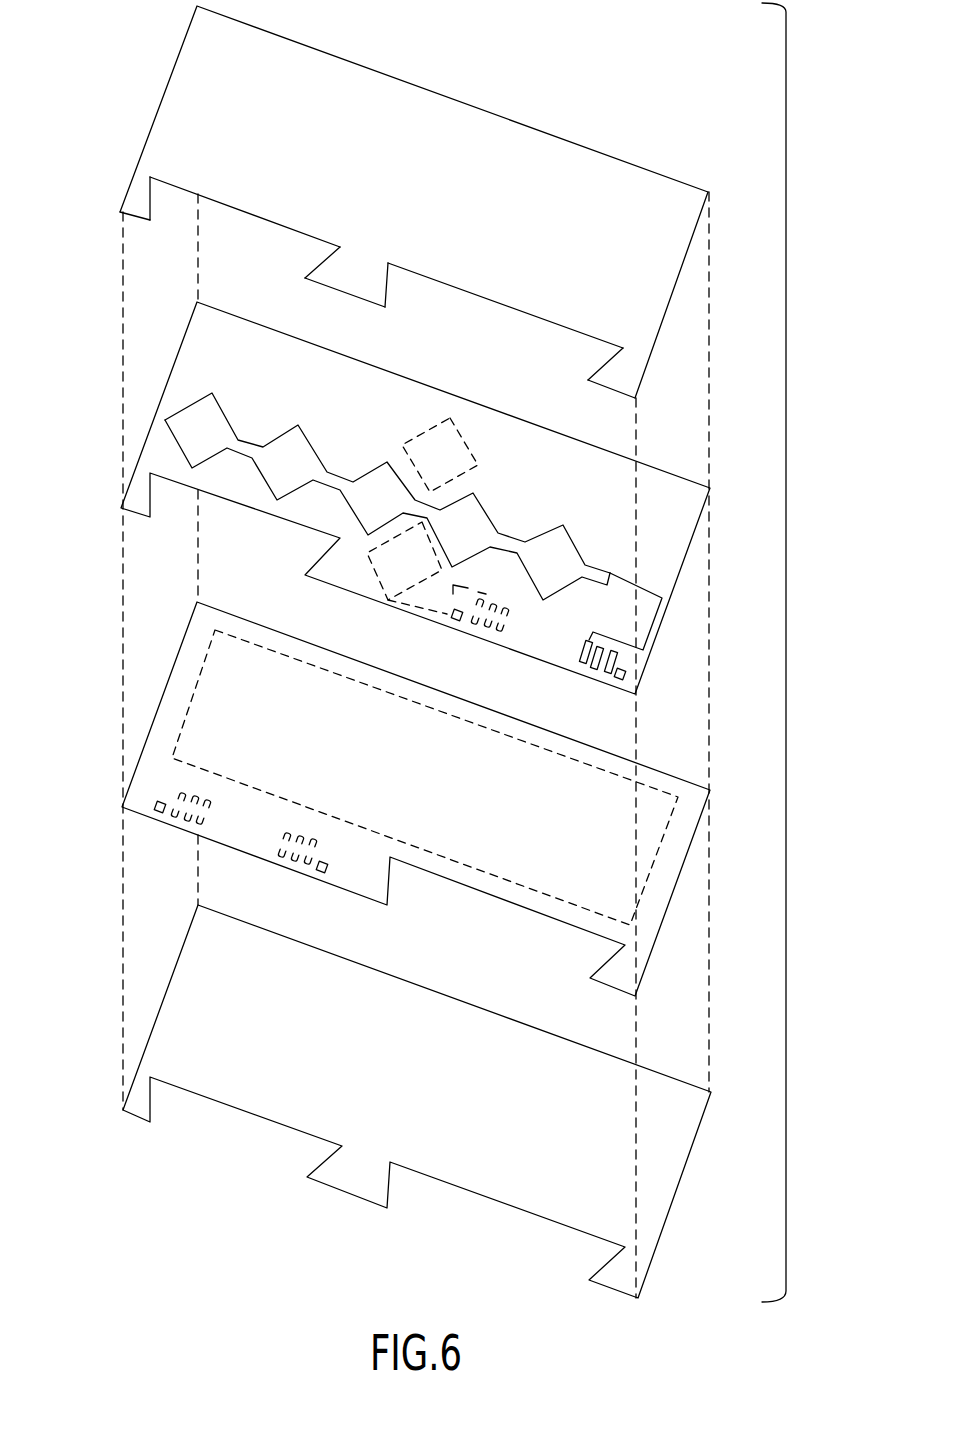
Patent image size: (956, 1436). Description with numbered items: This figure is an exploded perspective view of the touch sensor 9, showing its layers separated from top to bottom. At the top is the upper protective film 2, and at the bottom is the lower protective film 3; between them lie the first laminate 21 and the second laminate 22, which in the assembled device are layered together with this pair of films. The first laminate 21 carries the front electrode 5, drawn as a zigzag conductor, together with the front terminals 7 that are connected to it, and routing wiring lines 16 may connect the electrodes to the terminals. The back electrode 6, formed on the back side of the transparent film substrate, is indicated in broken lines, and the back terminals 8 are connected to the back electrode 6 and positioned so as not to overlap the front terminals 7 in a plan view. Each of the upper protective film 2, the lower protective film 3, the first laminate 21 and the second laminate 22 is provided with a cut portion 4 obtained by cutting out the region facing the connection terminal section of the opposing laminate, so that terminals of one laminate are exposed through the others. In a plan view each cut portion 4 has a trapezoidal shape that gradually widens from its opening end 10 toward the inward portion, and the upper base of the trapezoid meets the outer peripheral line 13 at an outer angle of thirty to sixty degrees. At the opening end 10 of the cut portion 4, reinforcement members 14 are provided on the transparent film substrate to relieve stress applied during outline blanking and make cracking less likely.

The upper protective film 2 is at (407, 202).
The lower protective film 3 is at (127, 942).
The cut portion 4 is at (160, 149).
The front electrode 5 is at (557, 558).
The back electrode 6 is at (460, 437).
The front terminals 7 is at (590, 675).
The back terminals 8 is at (500, 630).
The touch sensor 9 is at (786, 650).
The opening end 10 is at (172, 210).
The outer peripheral line 13 is at (667, 305).
The reinforcement members 14 is at (618, 683).
The routing wiring lines 16 is at (653, 599).
The first laminate 21 is at (125, 330).
The second laminate 22 is at (127, 640).